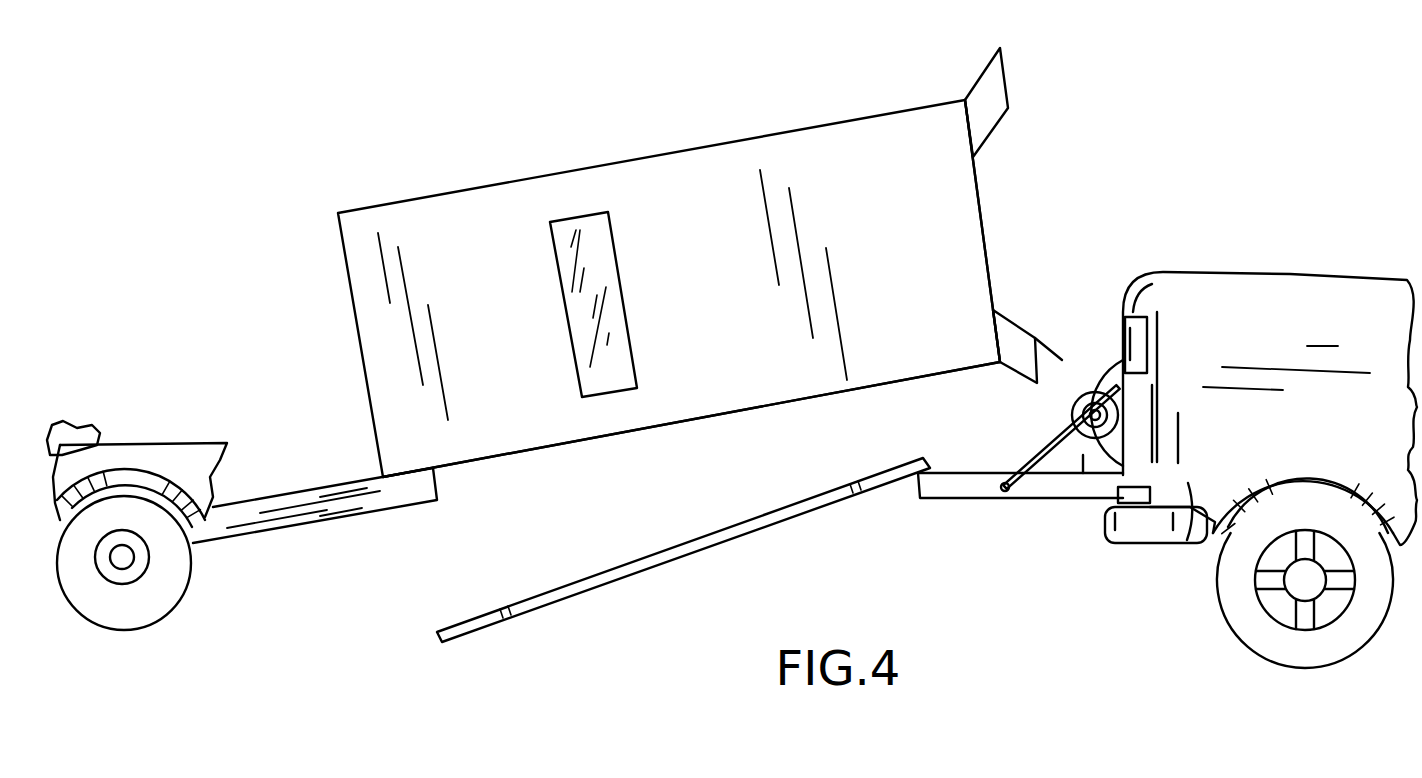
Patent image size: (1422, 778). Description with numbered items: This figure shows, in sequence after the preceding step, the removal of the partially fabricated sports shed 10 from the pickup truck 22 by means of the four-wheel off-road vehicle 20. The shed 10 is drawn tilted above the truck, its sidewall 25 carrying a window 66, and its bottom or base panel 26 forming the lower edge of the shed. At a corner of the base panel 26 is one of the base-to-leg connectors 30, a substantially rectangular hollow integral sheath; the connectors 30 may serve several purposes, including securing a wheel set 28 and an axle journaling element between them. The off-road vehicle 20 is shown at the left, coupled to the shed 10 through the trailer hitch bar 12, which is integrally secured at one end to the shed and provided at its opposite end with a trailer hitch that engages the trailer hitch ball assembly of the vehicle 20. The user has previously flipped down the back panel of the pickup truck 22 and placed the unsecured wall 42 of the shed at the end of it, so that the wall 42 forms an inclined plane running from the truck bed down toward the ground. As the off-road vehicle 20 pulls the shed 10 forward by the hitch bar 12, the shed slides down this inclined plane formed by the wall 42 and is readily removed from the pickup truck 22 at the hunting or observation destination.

The sports shed 10 is at (725, 107).
The trailer hitch bar 12 is at (360, 507).
The four-wheel off-road vehicle 20 is at (173, 590).
The pickup truck 22 is at (1177, 537).
The sidewall 25 is at (523, 453).
The base panel 26 is at (987, 230).
The wheel set 28 is at (1083, 476).
The base-to-leg connectors 30 is at (987, 102).
The unsecured wall 42 is at (722, 548).
The window 66 is at (560, 223).